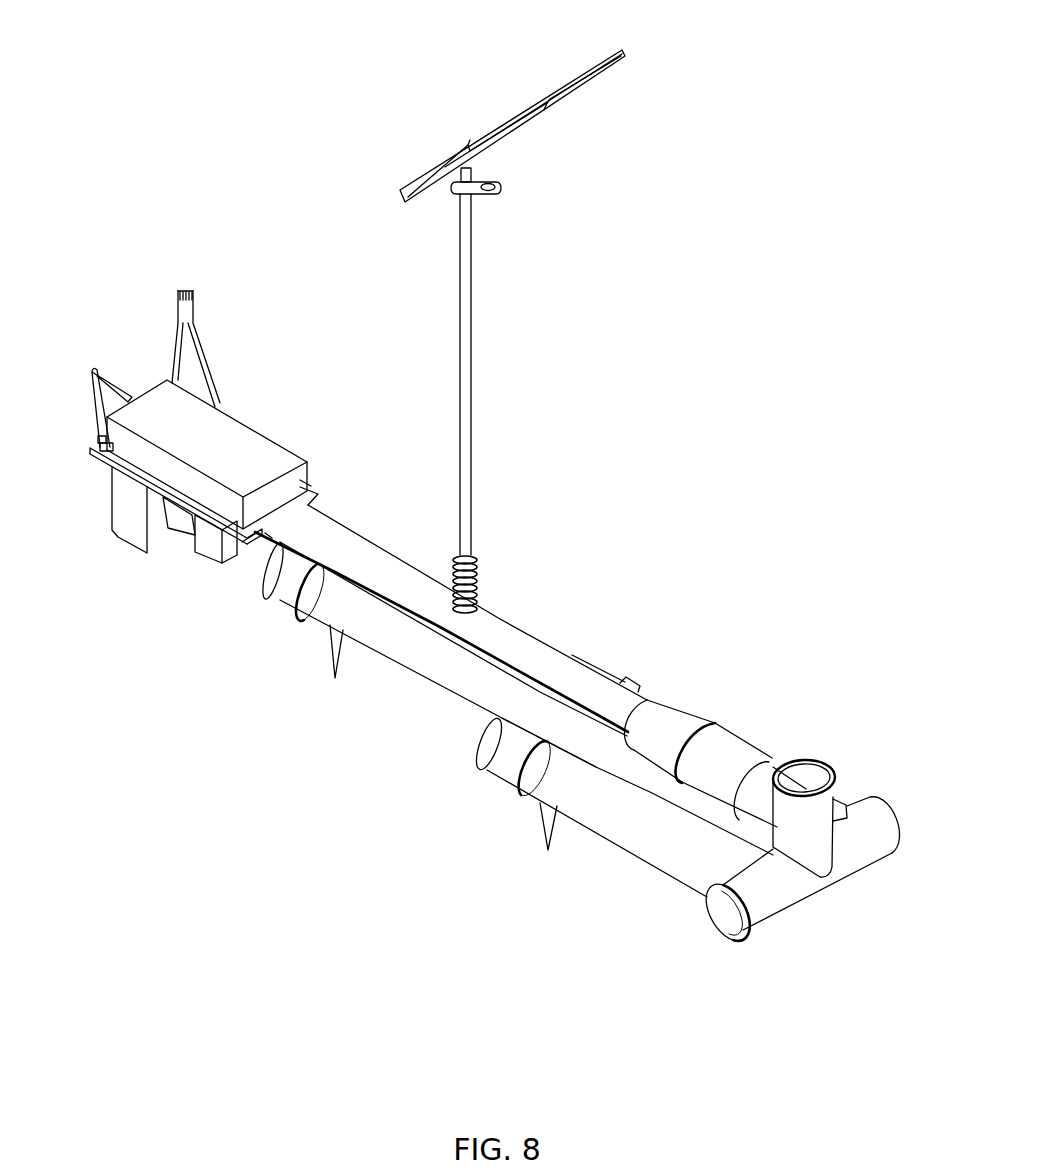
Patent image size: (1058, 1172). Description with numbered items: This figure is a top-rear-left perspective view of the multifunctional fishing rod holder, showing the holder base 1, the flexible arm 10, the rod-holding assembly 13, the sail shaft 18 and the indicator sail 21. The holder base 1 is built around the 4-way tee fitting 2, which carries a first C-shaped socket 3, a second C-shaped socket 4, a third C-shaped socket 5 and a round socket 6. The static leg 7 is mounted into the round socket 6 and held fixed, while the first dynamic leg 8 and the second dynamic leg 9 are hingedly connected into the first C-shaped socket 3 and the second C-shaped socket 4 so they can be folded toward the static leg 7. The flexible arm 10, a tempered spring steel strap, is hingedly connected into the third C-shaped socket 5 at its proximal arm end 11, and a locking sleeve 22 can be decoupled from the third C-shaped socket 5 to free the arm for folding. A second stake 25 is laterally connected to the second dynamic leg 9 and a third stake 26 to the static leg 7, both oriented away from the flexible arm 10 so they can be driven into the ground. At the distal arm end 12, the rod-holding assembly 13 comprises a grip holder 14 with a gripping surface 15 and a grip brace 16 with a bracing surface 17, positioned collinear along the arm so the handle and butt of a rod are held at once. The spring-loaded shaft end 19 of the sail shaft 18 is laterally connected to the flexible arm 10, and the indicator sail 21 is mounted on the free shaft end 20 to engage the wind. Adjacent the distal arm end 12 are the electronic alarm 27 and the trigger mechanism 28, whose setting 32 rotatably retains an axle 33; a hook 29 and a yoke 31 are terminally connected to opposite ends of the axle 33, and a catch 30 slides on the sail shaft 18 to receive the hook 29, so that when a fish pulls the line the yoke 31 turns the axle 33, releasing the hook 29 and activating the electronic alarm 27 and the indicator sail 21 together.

The holder base 1 is at (851, 988).
The 4-way tee fitting 2 is at (931, 770).
The first C-shaped socket 3 is at (893, 855).
The second C-shaped socket 4 is at (735, 935).
The third C-shaped socket 5 is at (838, 800).
The round socket 6 is at (740, 844).
The static leg 7 is at (458, 697).
The first dynamic leg 8 is at (622, 686).
The second dynamic leg 9 is at (648, 858).
The flexible arm 10 is at (372, 548).
The proximal arm end 11 is at (777, 770).
The distal arm end 12 is at (89, 451).
The rod-holding assembly 13 is at (113, 616).
The grip holder 14 is at (131, 535).
The gripping surface 15 is at (164, 532).
The grip brace 16 is at (213, 556).
The bracing surface 17 is at (239, 546).
The sail shaft 18 is at (468, 374).
The spring-loaded shaft end 19 is at (474, 599).
The free shaft end 20 is at (477, 168).
The indicator sail 21 is at (572, 82).
The locking sleeve 22 is at (731, 745).
The second stake 25 is at (545, 828).
The third stake 26 is at (330, 650).
The electronic alarm 27 is at (268, 446).
The trigger mechanism 28 is at (241, 270).
The hook 29 is at (108, 388).
The catch 30 is at (495, 193).
The yoke 31 is at (200, 318).
The setting 32 is at (116, 448).
The axle 33 is at (100, 436).